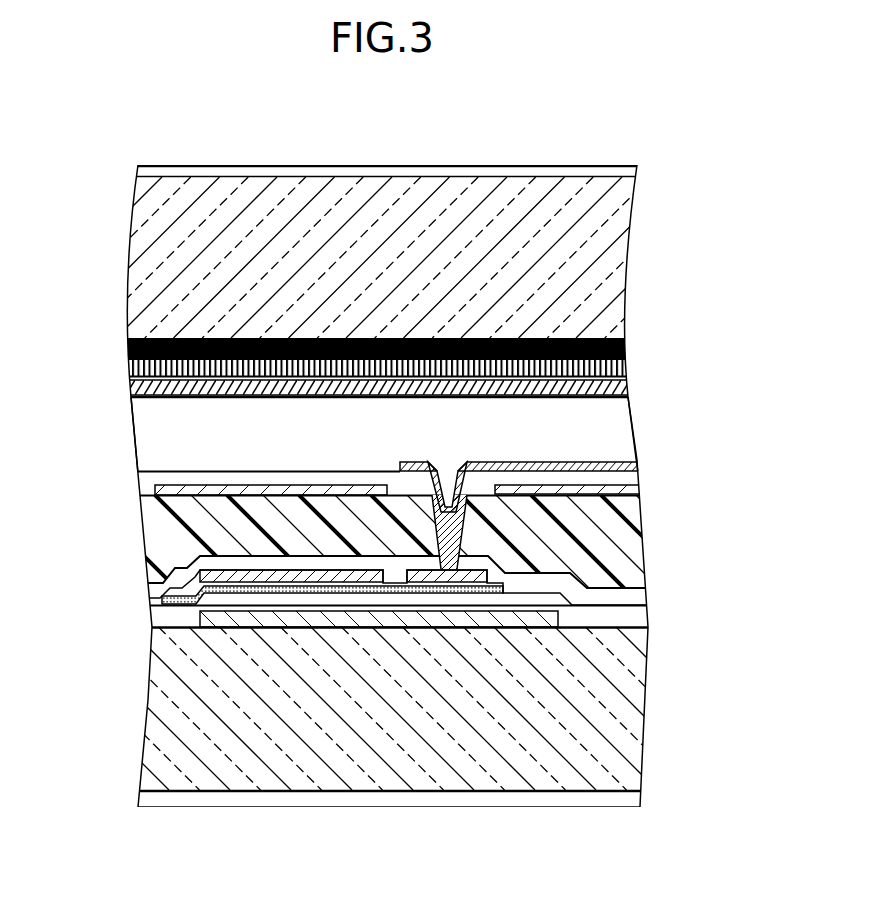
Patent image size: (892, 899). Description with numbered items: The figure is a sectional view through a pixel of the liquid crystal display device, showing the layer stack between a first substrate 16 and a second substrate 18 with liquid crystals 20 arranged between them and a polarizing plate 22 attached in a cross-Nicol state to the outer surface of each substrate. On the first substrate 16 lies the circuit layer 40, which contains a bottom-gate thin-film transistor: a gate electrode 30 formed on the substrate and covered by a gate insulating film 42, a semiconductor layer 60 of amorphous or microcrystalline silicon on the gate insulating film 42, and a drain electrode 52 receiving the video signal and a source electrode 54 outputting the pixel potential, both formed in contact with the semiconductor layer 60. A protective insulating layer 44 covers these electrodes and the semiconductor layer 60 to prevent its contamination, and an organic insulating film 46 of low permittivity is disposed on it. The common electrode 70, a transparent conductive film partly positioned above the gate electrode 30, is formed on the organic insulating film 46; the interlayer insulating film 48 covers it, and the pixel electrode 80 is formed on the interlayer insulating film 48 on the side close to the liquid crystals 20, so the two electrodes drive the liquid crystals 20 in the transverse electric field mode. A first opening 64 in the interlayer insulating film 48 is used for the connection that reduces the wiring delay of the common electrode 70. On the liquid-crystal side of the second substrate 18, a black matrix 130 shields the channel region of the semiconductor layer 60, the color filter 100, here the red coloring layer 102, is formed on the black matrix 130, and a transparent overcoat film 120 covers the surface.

The first substrate 16 is at (173, 750).
The second substrate 18 is at (425, 208).
The liquid crystals 20 is at (612, 424).
The polarizing plate 22 is at (297, 175).
The gate electrode 30 is at (247, 620).
The circuit layer 40 is at (667, 611).
The gate insulating film 42 is at (362, 592).
The protective insulating layer 44 is at (536, 583).
The organic insulating film 46 is at (623, 542).
The interlayer insulating film 48 is at (625, 479).
The drain electrode 52 is at (313, 578).
The source electrode 54 is at (470, 573).
The semiconductor layer 60 is at (421, 590).
The first opening 64 is at (444, 458).
The common electrode 70 is at (150, 488).
The pixel electrode 80 is at (617, 461).
The color filter 100 is at (444, 360).
The red coloring layer 102 is at (613, 367).
The overcoat film 120 is at (612, 388).
The black matrix 130 is at (126, 342).